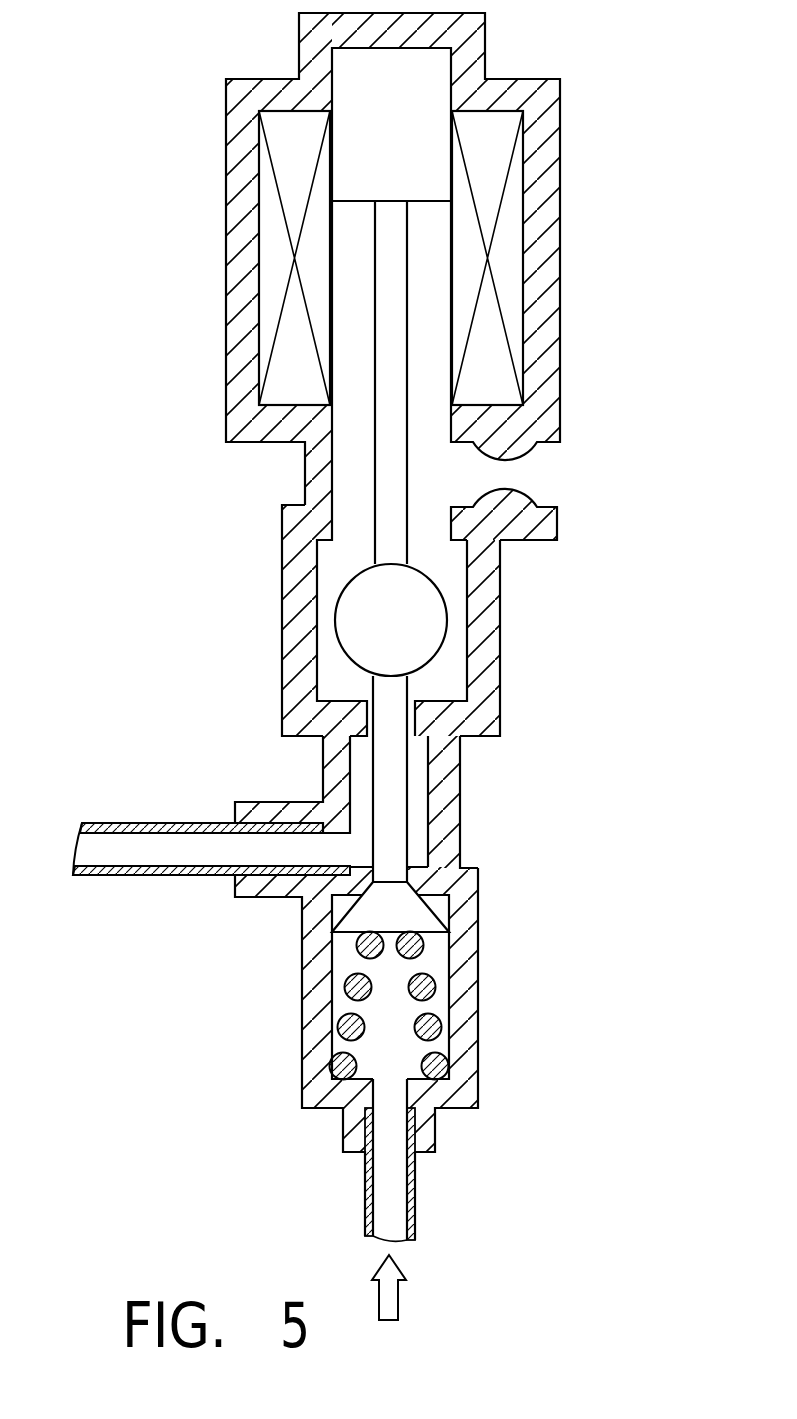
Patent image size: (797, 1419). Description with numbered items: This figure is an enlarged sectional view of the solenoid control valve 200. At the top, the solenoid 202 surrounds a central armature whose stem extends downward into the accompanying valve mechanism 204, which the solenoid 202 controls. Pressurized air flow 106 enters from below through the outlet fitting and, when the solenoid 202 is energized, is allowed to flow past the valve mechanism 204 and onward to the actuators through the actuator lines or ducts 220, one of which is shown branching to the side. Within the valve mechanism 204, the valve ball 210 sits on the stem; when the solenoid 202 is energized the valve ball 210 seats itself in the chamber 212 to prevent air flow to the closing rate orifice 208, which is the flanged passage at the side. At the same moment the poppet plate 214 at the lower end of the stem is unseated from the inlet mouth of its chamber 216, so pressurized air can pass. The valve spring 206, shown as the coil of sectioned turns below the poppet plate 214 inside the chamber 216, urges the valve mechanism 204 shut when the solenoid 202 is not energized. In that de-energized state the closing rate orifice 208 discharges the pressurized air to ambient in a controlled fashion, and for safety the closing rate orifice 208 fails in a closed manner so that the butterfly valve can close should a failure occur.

The solenoid control valve 200 is at (585, 283).
The solenoid 202 is at (517, 85).
The valve mechanism 204 is at (268, 613).
The valve spring 206 is at (428, 980).
The closing rate orifice 208 is at (525, 492).
The valve ball 210 is at (425, 636).
The chamber 212 is at (488, 712).
The poppet plate 214 is at (428, 918).
The chamber 216 is at (478, 1058).
The actuator lines or ducts 220 is at (135, 823).
The pressurized air flow 106 is at (398, 1300).